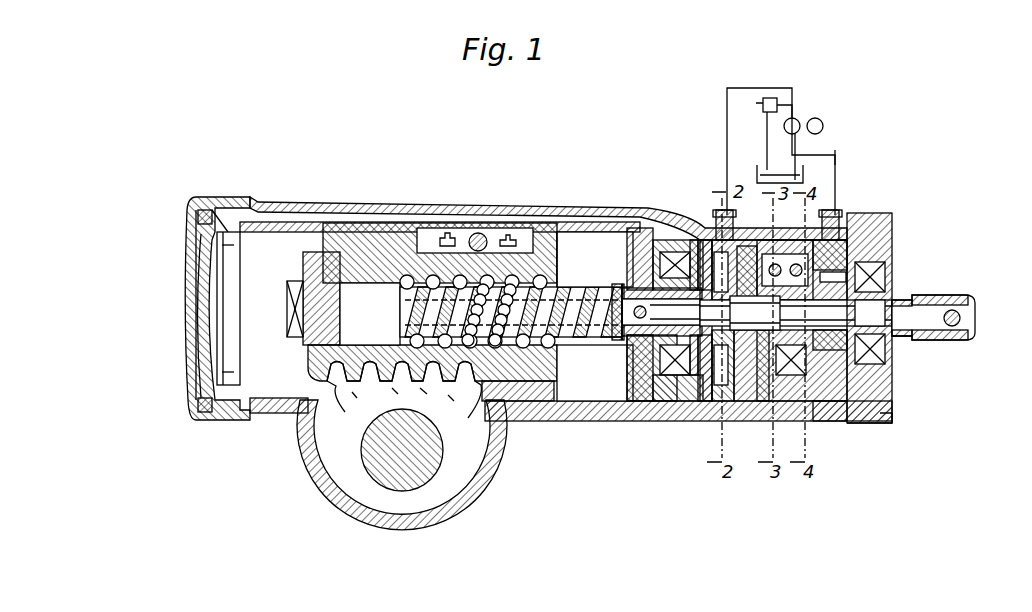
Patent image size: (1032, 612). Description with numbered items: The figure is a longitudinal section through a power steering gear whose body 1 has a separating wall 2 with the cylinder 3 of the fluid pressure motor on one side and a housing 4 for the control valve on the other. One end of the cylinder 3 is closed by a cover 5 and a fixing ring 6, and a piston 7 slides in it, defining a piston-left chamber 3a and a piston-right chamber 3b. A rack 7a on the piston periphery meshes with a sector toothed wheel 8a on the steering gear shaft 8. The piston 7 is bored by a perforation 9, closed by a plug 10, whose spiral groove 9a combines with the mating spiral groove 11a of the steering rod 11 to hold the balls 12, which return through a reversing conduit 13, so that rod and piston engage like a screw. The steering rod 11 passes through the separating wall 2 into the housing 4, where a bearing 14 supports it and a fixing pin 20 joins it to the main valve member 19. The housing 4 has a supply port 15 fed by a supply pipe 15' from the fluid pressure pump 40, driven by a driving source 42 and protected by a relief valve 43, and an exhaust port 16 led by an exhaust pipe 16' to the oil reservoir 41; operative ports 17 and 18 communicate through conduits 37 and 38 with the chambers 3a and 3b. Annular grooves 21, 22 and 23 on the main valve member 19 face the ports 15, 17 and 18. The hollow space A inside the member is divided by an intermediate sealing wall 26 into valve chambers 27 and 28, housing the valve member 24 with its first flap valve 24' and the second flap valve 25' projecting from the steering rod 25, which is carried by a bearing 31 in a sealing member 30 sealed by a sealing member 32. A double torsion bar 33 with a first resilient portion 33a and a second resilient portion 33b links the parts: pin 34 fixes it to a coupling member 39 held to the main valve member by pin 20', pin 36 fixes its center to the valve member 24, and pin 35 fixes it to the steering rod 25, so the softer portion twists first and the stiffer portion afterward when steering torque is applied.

The body 1 is at (592, 421).
The separating wall 2 is at (660, 405).
The cylinder 3 is at (560, 400).
The piston-left chamber 3a is at (271, 376).
The piston-right chamber 3b is at (586, 376).
The housing 4 is at (685, 405).
The cover 5 is at (216, 412).
The fixing ring 6 is at (192, 410).
The piston 7 is at (530, 381).
The rack 7a is at (258, 400).
The steering gear shaft 8 is at (372, 455).
The sector toothed wheel 8a is at (345, 412).
The perforation 9 is at (362, 345).
The spiral groove 9a is at (440, 230).
The plug 10 is at (298, 283).
The steering rod 11 is at (586, 287).
The mating spiral groove 11a is at (562, 287).
The balls 12 is at (520, 290).
The reversing conduit 13 is at (497, 240).
The bearing 14 is at (670, 405).
The supply port 15 is at (712, 259).
The supply pipe 15' is at (767, 134).
The exhaust port 16 is at (841, 217).
The exhaust pipe 16' is at (883, 137).
The operative port 17 is at (822, 215).
The operative port 18 is at (778, 402).
The main valve member 19 is at (750, 402).
The fixing pin 20 is at (669, 216).
The pin 20' is at (681, 216).
The annular groove 21 is at (735, 222).
The annular groove 22 is at (830, 245).
The annular groove 23 is at (813, 218).
The valve member 24 is at (662, 312).
The first flap valve 24' is at (620, 302).
The steering rod 25 is at (934, 293).
The second flap valve 25' is at (921, 366).
The intermediate sealing wall 26 is at (728, 402).
The valve chamber 27 is at (706, 240).
The valve chamber 28 is at (745, 250).
The sealing member 30 is at (872, 242).
The bearing 31 is at (843, 422).
The sealing member 32 is at (888, 290).
The double torsion bar 33 is at (947, 295).
The first resilient portion 33a is at (650, 405).
The second resilient portion 33b is at (868, 423).
The pin 34 is at (618, 340).
The pin 35 is at (973, 318).
The pin 36 is at (715, 402).
The conduit 37 is at (640, 235).
The conduit 38 is at (700, 405).
The coupling member 39 is at (610, 421).
The fluid pressure pump 40 is at (797, 118).
The oil reservoir 41 is at (803, 180).
The driving source 42 is at (820, 118).
The relief valve 43 is at (768, 100).
The hollow space A is at (812, 421).